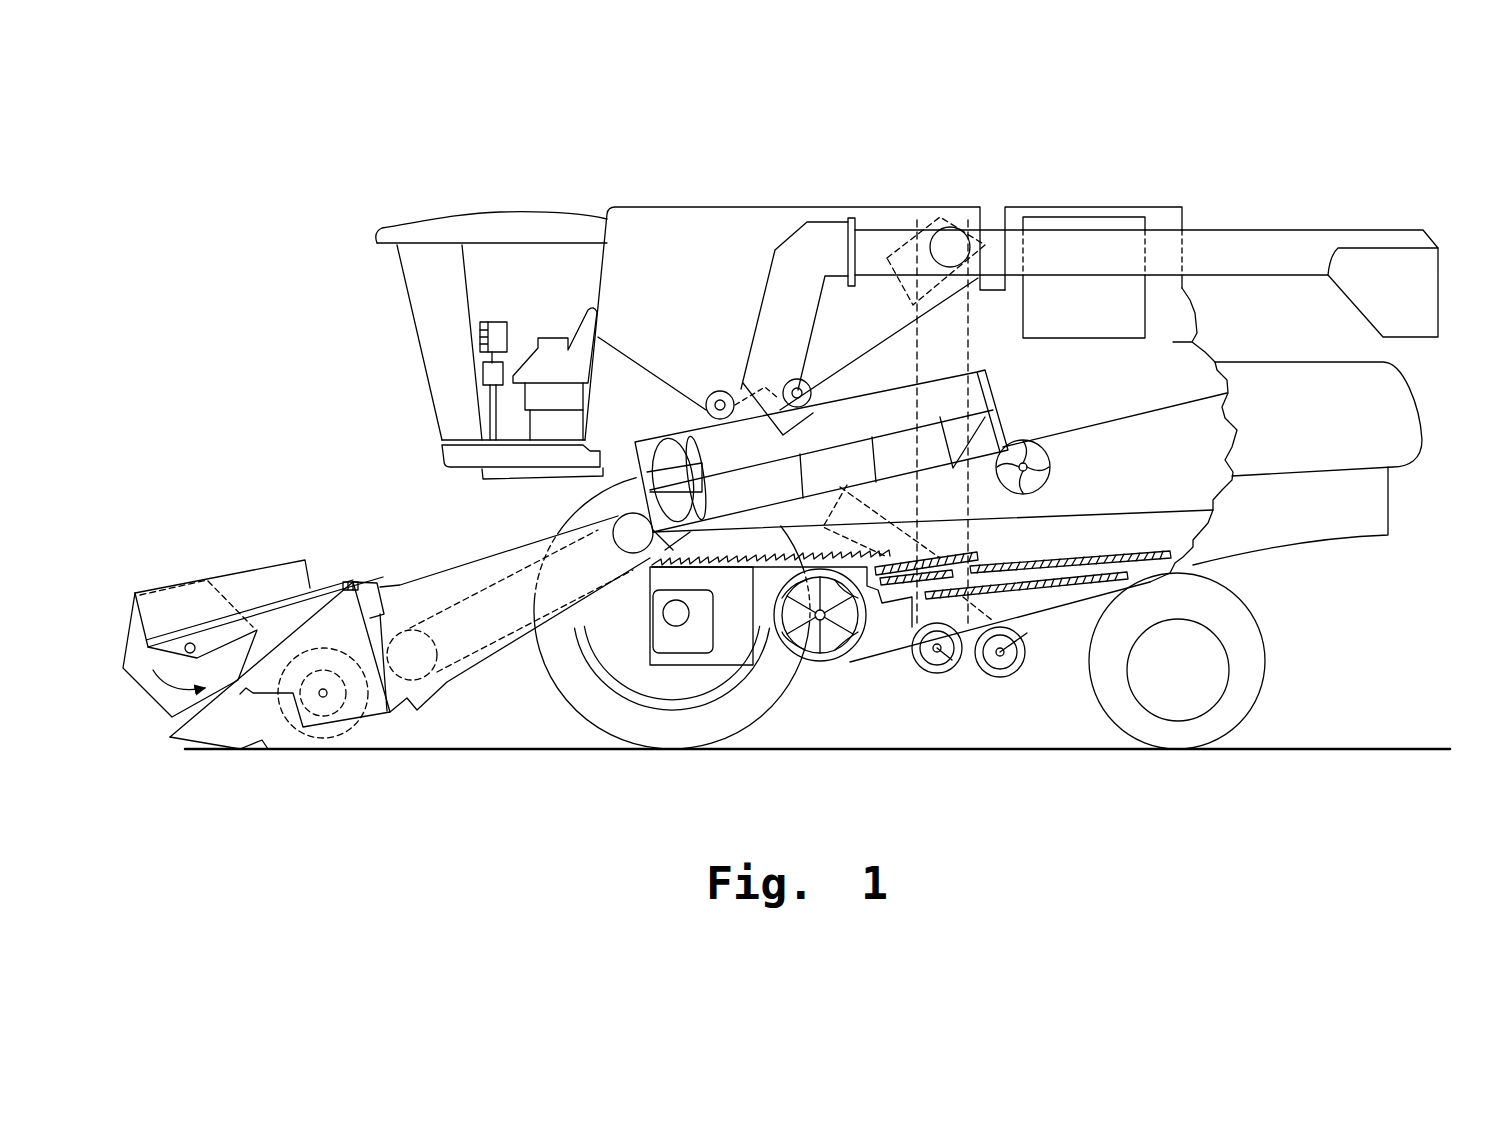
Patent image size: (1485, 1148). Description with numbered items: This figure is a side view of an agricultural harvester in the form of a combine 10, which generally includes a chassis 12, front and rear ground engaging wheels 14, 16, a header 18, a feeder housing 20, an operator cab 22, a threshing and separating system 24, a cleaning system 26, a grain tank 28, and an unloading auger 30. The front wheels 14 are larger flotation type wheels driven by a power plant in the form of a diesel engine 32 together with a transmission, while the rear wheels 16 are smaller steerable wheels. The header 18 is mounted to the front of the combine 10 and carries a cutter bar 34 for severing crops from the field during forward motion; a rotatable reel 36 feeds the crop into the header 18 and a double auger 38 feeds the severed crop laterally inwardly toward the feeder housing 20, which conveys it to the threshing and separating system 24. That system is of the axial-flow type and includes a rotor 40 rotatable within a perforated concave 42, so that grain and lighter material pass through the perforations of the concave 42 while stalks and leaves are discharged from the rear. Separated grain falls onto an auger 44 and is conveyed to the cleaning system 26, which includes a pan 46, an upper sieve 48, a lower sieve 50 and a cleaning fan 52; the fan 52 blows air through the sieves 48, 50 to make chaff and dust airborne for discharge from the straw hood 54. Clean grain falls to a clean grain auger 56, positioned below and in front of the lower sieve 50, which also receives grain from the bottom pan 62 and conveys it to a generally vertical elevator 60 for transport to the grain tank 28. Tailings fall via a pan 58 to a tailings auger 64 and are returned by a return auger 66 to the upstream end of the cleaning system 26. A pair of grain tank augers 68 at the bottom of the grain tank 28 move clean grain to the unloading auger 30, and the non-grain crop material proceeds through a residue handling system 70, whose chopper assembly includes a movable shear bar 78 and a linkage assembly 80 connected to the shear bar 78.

The combine 10 is at (480, 188).
The chassis 12 is at (1170, 576).
The front wheels 14 is at (572, 701).
The rear wheels 16 is at (1262, 685).
The header 18 is at (242, 645).
The feeder housing 20 is at (458, 566).
The operator cab 22 is at (412, 320).
The threshing and separating system 24 is at (573, 491).
The cleaning system 26 is at (892, 670).
The grain tank 28 is at (668, 212).
The unloading auger 30 is at (1280, 235).
The diesel engine 32 is at (1072, 218).
The cutter bar 34 is at (245, 751).
The rotatable reel 36 is at (132, 637).
The double auger 38 is at (324, 697).
The rotor 40 is at (660, 450).
The perforated concave 42 is at (824, 441).
The auger 44 is at (643, 580).
The pan 46 is at (978, 553).
The upper sieve 48 is at (1087, 554).
The lower sieve 50 is at (1053, 592).
The cleaning fan 52 is at (827, 645).
The straw hood 54 is at (1400, 408).
The clean grain auger 56 is at (943, 665).
The pan 58 is at (1086, 594).
The elevator 60 is at (970, 345).
The bottom pan 62 is at (1108, 598).
The tailings auger 64 is at (999, 670).
The return auger 66 is at (907, 532).
The grain tank augers 68 is at (718, 391).
The residue handling system 70 is at (1352, 552).
The shear bar 78 is at (478, 373).
The linkage assembly 80 is at (497, 320).